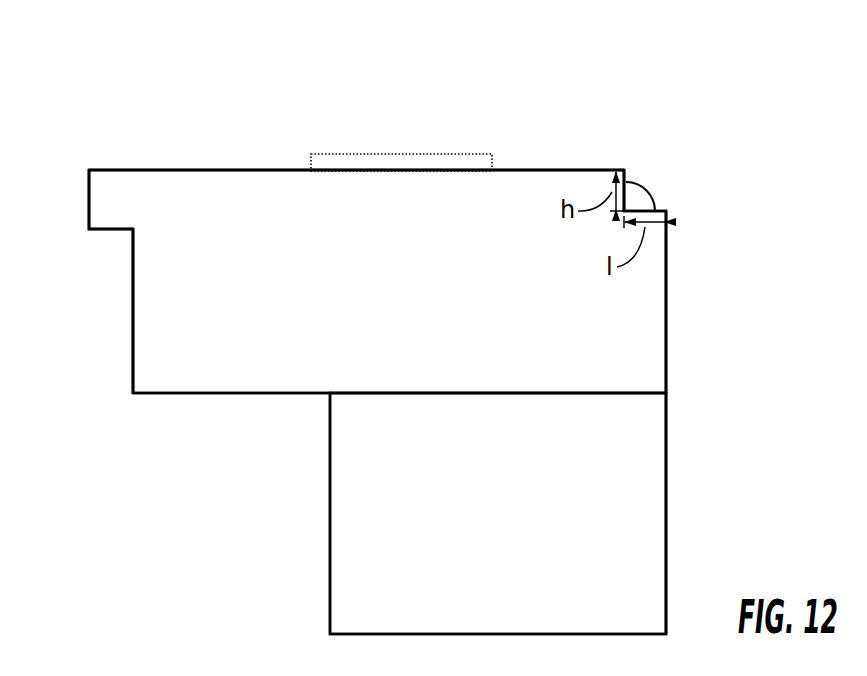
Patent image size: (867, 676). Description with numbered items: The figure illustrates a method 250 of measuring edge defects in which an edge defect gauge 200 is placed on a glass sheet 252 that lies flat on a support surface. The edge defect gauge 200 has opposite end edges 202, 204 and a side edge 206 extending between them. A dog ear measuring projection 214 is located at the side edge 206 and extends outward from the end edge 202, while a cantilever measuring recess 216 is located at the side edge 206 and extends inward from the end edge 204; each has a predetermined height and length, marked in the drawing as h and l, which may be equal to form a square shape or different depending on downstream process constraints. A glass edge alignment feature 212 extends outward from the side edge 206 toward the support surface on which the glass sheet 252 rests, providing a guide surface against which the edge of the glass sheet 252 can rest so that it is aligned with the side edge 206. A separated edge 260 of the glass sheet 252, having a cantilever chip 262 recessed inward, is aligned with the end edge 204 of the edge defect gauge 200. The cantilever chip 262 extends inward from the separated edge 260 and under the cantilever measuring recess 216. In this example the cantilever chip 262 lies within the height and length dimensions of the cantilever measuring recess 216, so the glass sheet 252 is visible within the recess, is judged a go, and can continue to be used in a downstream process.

The edge defect gauge 200 is at (208, 160).
The end edge 202 is at (132, 342).
The end edge 204 is at (667, 308).
The side edge 206 is at (265, 168).
The glass edge alignment feature 212 is at (428, 152).
The dog ear measuring projection 214 is at (72, 190).
The cantilever measuring recess 216 is at (640, 170).
The method of measuring edge defects 250 is at (716, 115).
The glass sheet 252 is at (320, 497).
The separated edge 260 is at (667, 520).
The cantilever chip 262 is at (662, 192).